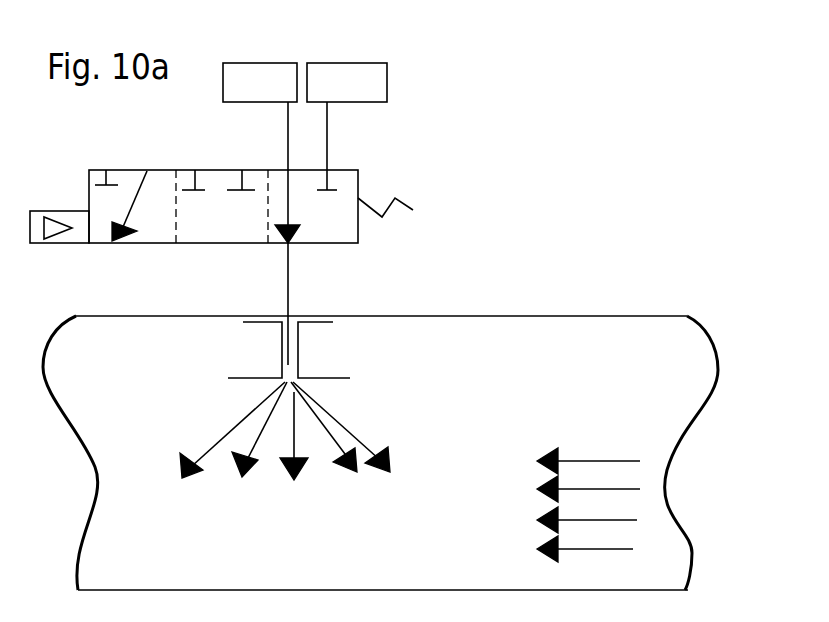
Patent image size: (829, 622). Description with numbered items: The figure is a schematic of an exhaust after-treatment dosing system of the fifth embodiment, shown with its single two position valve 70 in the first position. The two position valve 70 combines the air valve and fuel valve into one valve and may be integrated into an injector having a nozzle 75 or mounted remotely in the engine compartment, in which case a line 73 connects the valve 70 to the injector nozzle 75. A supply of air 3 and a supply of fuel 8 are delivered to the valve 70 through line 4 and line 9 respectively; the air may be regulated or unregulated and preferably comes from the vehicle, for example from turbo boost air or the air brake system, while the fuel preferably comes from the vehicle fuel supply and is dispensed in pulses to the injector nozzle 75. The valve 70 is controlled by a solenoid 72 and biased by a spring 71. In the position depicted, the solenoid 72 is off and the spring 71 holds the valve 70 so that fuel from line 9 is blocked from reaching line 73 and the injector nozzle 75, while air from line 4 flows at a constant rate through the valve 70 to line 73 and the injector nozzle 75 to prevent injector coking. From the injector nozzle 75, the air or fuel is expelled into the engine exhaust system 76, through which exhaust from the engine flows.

The supply of air 3 is at (285, 72).
The supply of fuel 8 is at (375, 72).
The air line 4 is at (283, 142).
The fuel line 9 is at (332, 128).
The two position valve 70 is at (358, 170).
The spring 71 is at (408, 203).
The solenoid 72 is at (65, 222).
The line 73 is at (285, 295).
The injector nozzle 75 is at (307, 347).
The engine exhaust system 76 is at (665, 352).